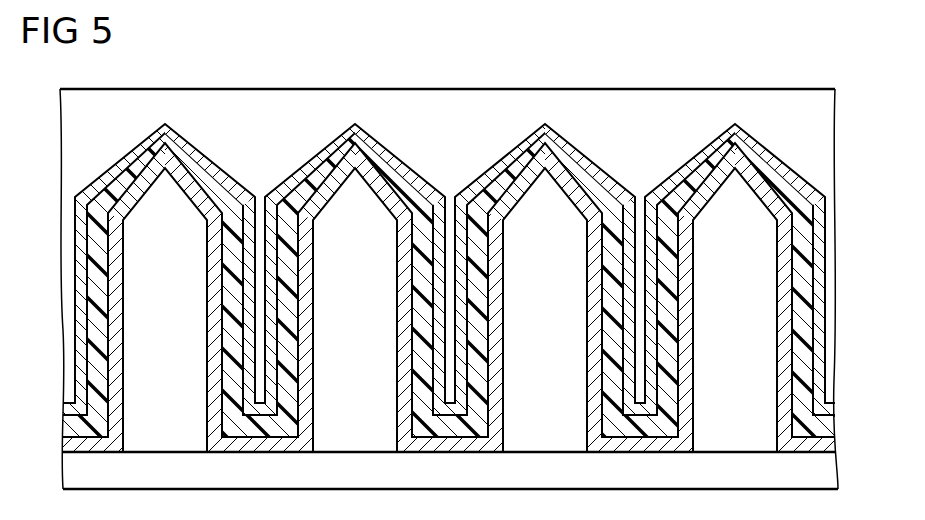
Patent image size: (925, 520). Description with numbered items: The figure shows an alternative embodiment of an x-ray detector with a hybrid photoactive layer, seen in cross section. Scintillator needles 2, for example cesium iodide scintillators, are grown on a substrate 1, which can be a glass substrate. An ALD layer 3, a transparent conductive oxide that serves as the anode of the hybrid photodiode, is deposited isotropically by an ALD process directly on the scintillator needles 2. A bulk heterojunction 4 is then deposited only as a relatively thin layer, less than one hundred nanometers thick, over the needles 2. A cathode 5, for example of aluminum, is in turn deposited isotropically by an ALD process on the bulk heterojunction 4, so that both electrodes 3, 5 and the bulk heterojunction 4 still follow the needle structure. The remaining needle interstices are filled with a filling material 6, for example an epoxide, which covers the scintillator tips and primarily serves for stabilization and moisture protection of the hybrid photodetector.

The substrate 1 is at (82, 473).
The scintillator needles 2 is at (140, 387).
The ALD layer 3 is at (115, 347).
The bulk heterojunction 4 is at (93, 243).
The cathode 5 is at (98, 188).
The filling material 6 is at (80, 115).